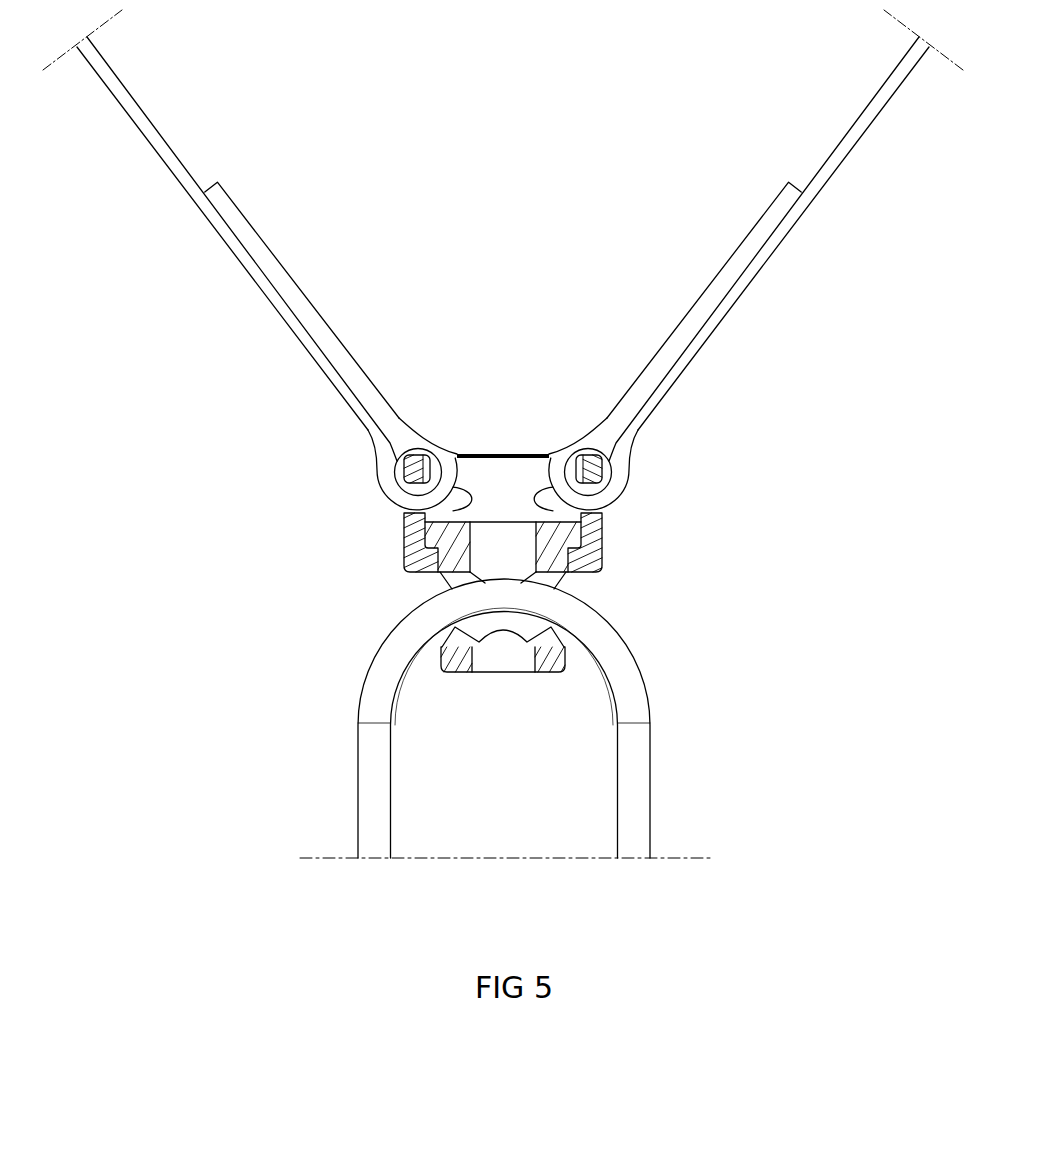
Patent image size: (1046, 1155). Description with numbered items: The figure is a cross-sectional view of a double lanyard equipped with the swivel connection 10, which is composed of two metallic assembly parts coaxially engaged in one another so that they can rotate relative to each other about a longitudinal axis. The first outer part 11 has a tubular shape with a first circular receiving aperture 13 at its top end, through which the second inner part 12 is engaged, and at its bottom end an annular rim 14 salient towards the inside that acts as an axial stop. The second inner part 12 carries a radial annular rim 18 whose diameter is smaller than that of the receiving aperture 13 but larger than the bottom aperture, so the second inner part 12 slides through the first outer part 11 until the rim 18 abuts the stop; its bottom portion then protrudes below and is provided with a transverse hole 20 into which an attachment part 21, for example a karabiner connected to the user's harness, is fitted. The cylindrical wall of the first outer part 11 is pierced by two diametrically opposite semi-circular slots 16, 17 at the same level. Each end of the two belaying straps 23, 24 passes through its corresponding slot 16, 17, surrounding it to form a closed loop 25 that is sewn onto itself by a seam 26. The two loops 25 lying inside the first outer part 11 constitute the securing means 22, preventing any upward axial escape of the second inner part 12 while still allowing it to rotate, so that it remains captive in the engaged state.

The swivel connection 10 is at (353, 555).
The first outer part 11 is at (600, 535).
The second inner part 12 is at (592, 569).
The first circular receiving aperture 13 is at (493, 452).
The annular rim 14 is at (437, 557).
The semi-circular slot 16 is at (406, 515).
The semi-circular slot 17 is at (600, 510).
The radial annular rim 18 is at (442, 535).
The transverse hole 20 is at (468, 631).
The attachment part 21 is at (370, 766).
The securing means 22 is at (360, 463).
The belaying strap 23 is at (162, 147).
The belaying strap 24 is at (850, 140).
The closed loop 25 is at (403, 435).
The seam 26 is at (297, 300).